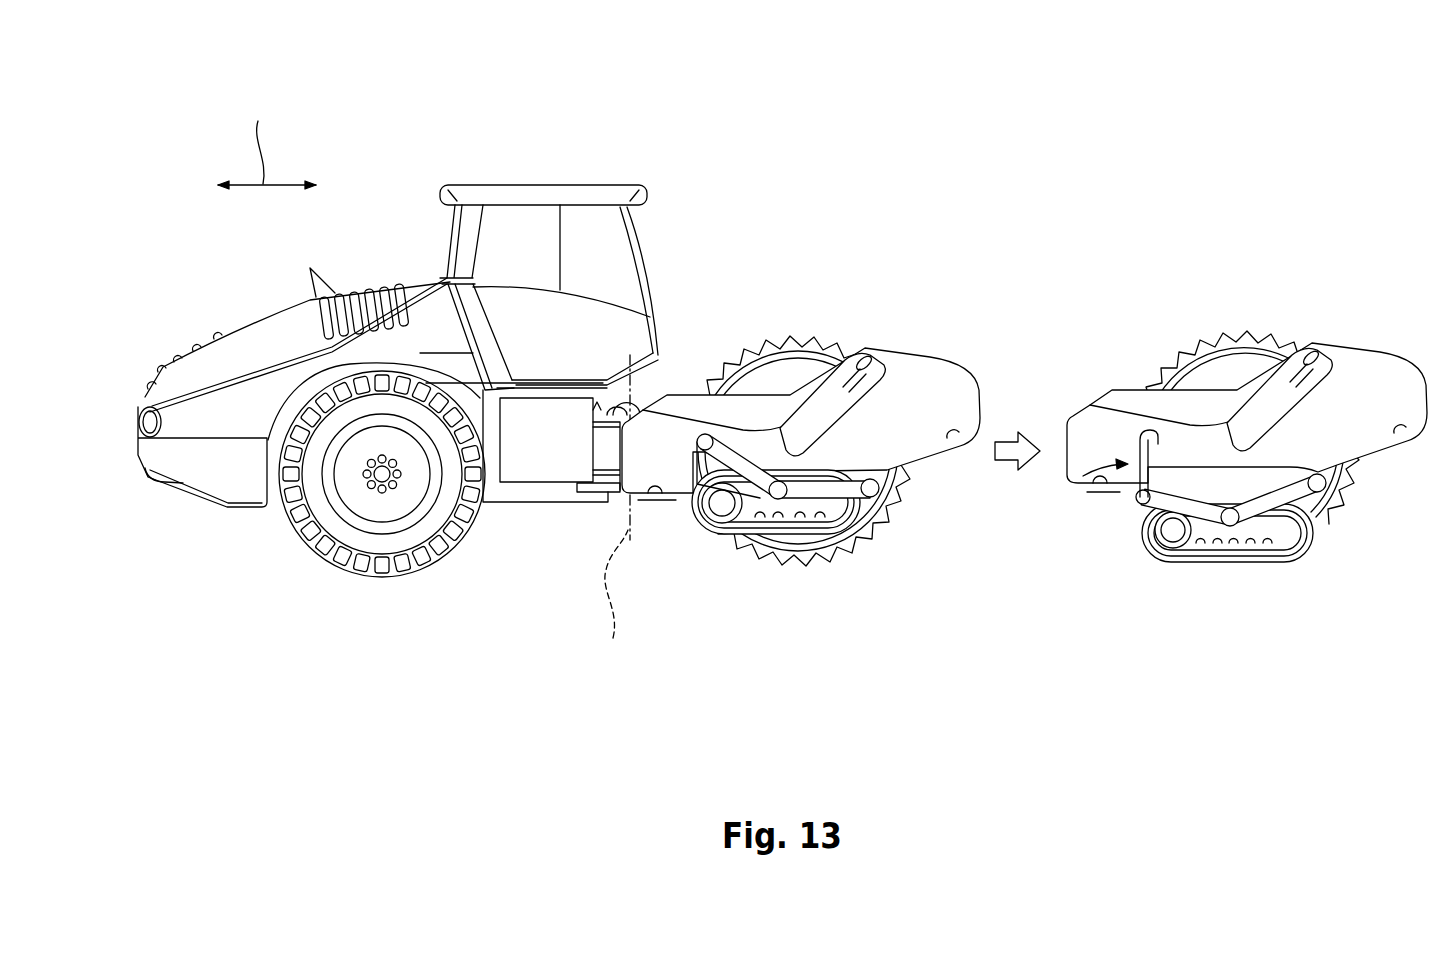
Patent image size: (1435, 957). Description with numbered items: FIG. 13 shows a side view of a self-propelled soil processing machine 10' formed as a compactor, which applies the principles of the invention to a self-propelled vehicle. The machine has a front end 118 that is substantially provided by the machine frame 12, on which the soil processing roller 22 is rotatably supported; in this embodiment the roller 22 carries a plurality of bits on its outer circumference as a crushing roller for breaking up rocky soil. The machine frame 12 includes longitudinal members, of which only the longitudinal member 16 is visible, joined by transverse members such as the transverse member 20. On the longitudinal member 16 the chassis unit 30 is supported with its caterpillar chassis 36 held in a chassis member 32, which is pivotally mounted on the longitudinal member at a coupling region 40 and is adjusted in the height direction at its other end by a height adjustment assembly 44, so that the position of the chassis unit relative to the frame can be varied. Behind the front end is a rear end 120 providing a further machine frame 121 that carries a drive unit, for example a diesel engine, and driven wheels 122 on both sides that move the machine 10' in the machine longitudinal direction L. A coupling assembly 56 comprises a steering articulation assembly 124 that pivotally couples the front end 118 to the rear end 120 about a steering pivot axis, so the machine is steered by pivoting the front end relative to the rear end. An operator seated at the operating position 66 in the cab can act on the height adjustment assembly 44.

The self-propelled soil processing machine 10' is at (1055, 117).
The rear end 120 is at (215, 305).
The operating position 66 is at (492, 185).
The coupling assembly 56 is at (637, 398).
The front end 118 is at (780, 293).
The soil processing roller 22 is at (796, 340).
The machine frame 12 is at (906, 350).
The longitudinal member 16 is at (917, 450).
The further machine frame 121 is at (268, 508).
The driven wheels 122 is at (297, 545).
The steering articulation assembly 124 is at (598, 484).
The transverse member 20 is at (655, 455).
The chassis member 32 is at (790, 500).
The chassis unit 30 is at (808, 576).
The caterpillar chassis 36 is at (865, 560).
The height adjustment assembly 44 is at (1083, 476).
The coupling region 40 is at (1138, 502).